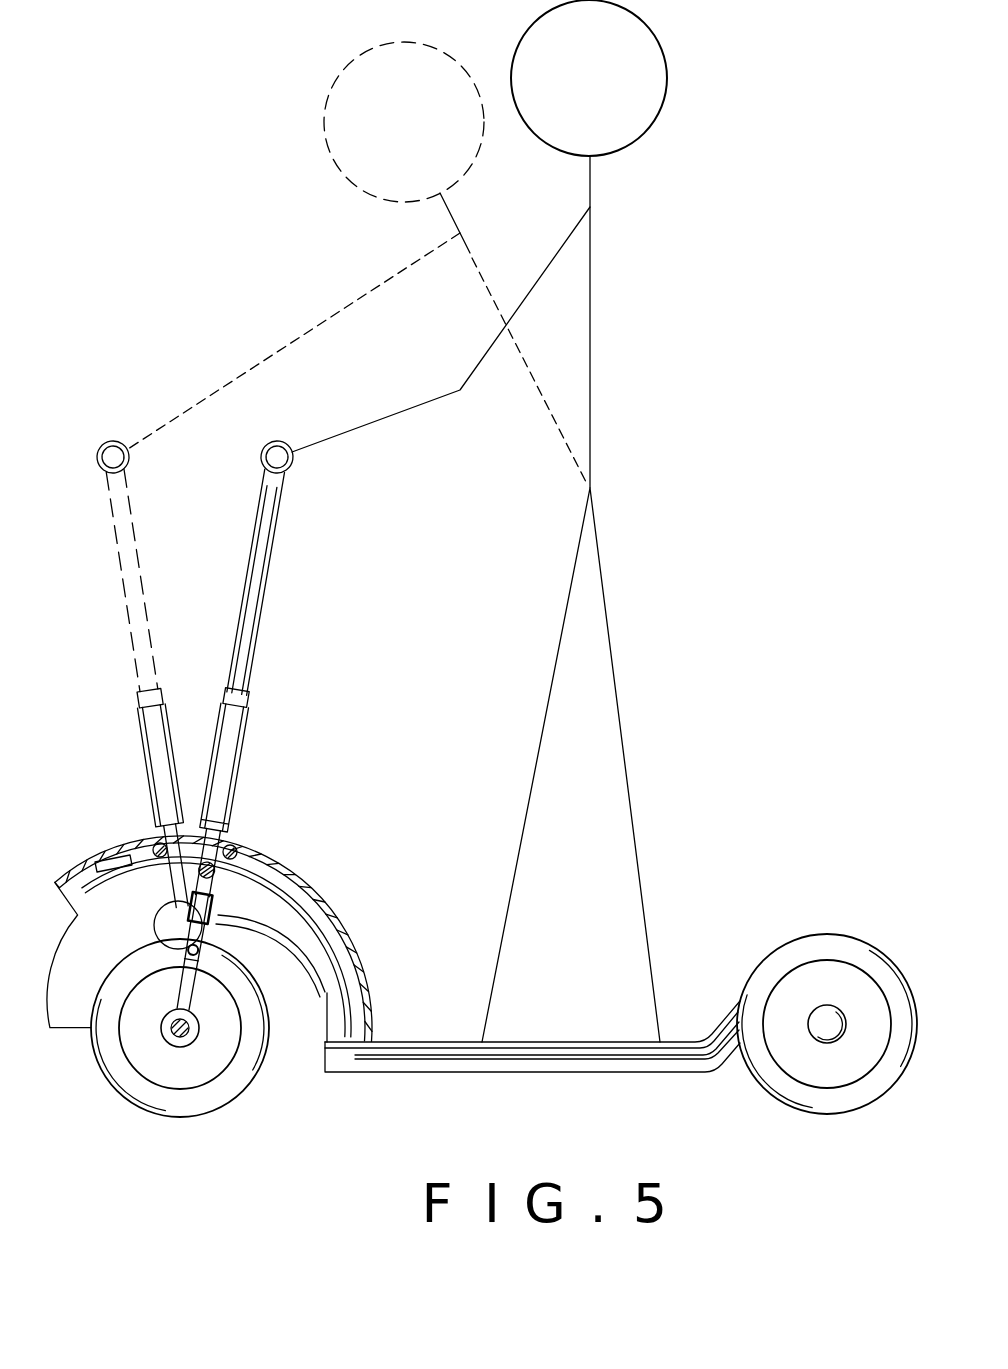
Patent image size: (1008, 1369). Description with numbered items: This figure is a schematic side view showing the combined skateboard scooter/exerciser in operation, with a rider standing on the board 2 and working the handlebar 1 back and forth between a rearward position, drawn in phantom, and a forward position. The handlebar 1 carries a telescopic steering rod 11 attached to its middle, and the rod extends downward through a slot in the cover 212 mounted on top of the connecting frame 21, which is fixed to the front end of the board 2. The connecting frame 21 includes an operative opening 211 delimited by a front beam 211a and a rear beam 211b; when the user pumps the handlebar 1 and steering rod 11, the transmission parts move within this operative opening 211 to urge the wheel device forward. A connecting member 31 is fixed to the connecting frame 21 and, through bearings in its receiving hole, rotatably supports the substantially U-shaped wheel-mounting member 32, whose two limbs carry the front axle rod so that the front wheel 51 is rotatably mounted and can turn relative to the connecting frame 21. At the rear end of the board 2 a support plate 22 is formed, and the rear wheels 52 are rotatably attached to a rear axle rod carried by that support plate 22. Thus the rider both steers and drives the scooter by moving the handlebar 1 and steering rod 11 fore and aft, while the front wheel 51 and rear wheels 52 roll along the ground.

The handlebar 1 is at (283, 466).
The telescopic steering rod 11 is at (227, 745).
The board 2 is at (487, 1057).
The connecting frame 21 is at (310, 917).
The operative opening 211 is at (178, 848).
The front beam 211a is at (150, 840).
The rear beam 211b is at (227, 850).
The cover 212 is at (203, 905).
The support plate 22 is at (592, 1043).
The connecting member 31 is at (208, 915).
The wheel-mounting member 32 is at (187, 985).
The front wheel 51 is at (225, 1088).
The rear wheel 52 is at (825, 945).